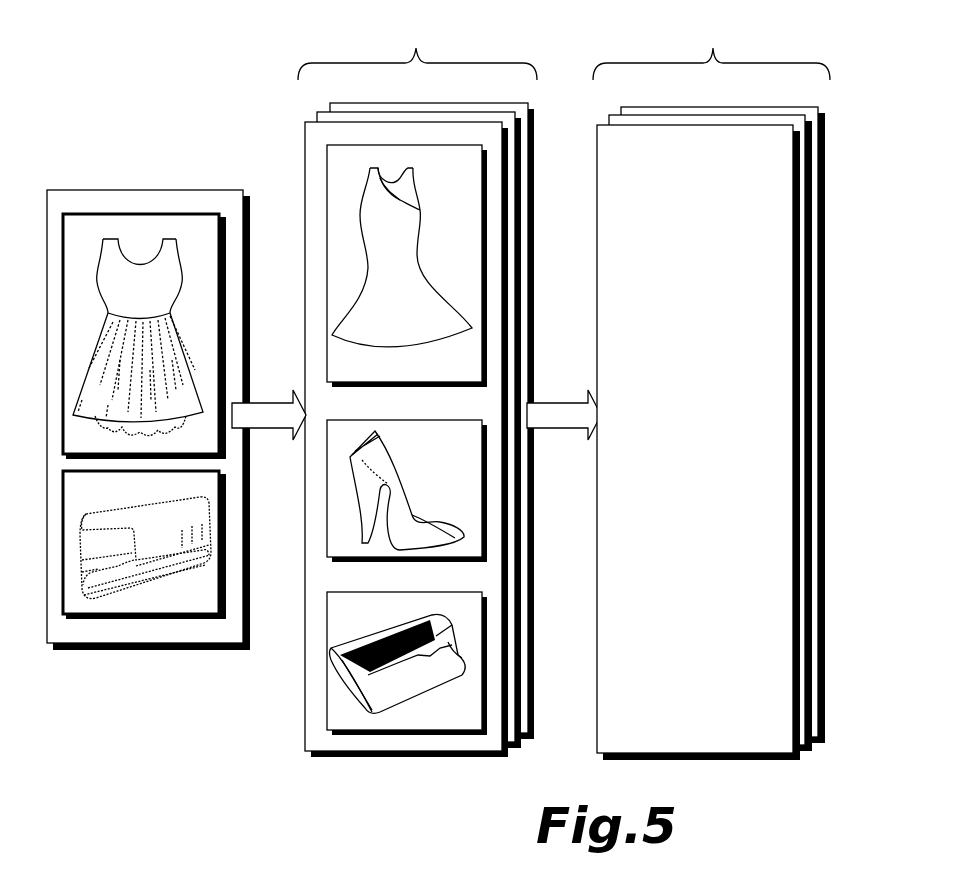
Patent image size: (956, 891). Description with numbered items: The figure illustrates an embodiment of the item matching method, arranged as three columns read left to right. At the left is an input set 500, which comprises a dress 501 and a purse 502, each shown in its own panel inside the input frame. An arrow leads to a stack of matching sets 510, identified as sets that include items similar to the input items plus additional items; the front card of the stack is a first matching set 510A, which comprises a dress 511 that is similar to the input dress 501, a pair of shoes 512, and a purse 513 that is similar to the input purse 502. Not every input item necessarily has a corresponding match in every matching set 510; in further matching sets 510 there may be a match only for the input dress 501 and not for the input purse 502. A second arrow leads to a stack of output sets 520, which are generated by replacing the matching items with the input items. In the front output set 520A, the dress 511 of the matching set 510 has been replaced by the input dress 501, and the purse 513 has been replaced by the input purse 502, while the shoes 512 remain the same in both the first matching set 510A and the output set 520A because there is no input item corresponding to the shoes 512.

The input set 500 is at (148, 190).
The dress 501 is at (97, 213).
The purse 502 is at (93, 620).
The matching sets 510 is at (379, 384).
The first matching set 510A is at (305, 137).
The dress 511 is at (327, 265).
The pair of shoes 512 is at (327, 488).
The purse 513 is at (327, 660).
The output sets 520 is at (686, 386).
The output set 520A is at (598, 165).